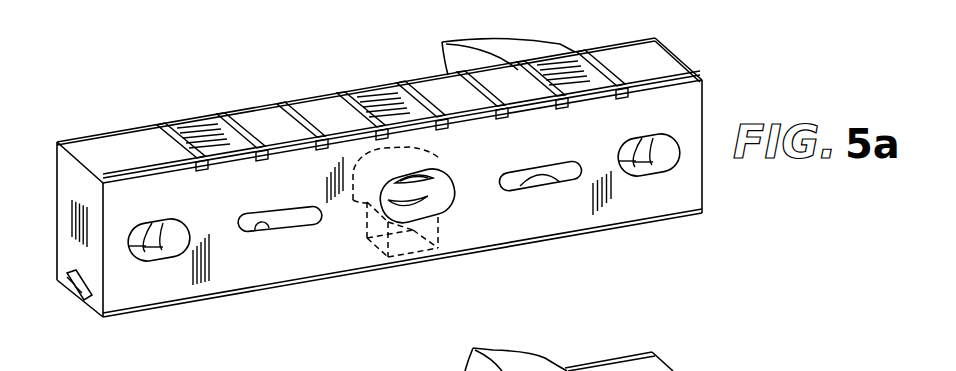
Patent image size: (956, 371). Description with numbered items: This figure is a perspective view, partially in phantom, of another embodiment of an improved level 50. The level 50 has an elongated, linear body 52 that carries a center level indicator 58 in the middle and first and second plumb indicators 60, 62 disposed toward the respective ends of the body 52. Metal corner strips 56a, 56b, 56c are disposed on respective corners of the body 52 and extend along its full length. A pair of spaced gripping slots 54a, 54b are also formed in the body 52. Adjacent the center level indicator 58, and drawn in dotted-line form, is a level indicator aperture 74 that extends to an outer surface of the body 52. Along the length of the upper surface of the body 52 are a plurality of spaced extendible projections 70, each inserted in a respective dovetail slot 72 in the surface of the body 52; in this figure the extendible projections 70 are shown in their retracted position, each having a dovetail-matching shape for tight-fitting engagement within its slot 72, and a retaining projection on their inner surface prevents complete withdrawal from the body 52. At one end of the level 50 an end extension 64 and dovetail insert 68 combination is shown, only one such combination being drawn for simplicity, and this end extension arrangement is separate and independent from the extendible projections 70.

The level 50 is at (44, 188).
The body 52 is at (685, 188).
The gripping slot 54a is at (263, 226).
The gripping slot 54b is at (548, 176).
The metal corner strip 56a is at (122, 128).
The metal corner strip 56b is at (127, 173).
The metal corner strip 56c is at (124, 317).
The center level indicator 58 is at (448, 188).
The first plumb indicator 60 is at (152, 250).
The second plumb indicator 62 is at (643, 162).
The end extension 64 is at (74, 298).
The dovetail insert 68 is at (68, 279).
The extendible projection 70 is at (491, 49).
The dovetail slot 72 is at (558, 353).
The level indicator aperture 74 is at (380, 248).